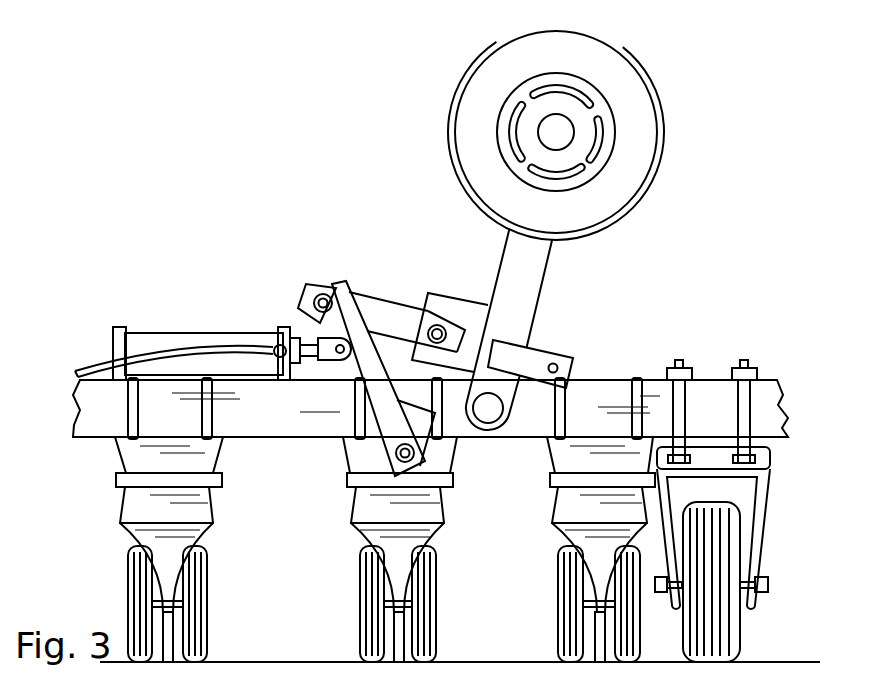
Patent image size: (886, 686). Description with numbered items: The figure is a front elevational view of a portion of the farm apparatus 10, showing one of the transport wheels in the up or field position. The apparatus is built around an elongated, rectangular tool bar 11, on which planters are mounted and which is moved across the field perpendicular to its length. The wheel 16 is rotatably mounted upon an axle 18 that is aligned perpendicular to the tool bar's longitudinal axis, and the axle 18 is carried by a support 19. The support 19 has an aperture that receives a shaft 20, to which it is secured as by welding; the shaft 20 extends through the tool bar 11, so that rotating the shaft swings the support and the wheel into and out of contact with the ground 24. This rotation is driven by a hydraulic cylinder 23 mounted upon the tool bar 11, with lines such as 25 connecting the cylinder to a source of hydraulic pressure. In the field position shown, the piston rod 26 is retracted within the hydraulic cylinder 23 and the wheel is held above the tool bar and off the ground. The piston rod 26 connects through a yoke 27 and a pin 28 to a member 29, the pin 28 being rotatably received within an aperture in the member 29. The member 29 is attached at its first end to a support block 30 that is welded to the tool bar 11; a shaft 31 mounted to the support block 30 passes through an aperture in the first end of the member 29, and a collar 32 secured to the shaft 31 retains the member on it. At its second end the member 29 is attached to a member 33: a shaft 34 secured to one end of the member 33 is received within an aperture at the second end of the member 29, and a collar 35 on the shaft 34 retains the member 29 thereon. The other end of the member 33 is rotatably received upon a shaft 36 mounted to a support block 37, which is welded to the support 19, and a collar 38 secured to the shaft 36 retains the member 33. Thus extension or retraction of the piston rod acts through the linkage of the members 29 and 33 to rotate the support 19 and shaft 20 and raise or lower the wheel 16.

The farm apparatus 10 is at (750, 240).
The tool bar 11 is at (102, 438).
The wheel 16 is at (665, 114).
The axle 18 is at (572, 124).
The support 19 is at (547, 283).
The shaft 20 is at (488, 424).
The hydraulic cylinder 23 is at (225, 332).
The ground 24 is at (798, 661).
The line 25 is at (103, 362).
The piston rod 26 is at (318, 354).
The yoke 27 is at (342, 357).
The pin 28 is at (387, 482).
The member 29 is at (414, 462).
The support block 30 is at (398, 468).
The shaft 31 is at (402, 466).
The collar 32 is at (388, 478).
The member 33 is at (376, 300).
The shaft 34 is at (323, 290).
The collar 35 is at (330, 283).
The shaft 36 is at (433, 331).
The support block 37 is at (463, 293).
The collar 38 is at (440, 327).